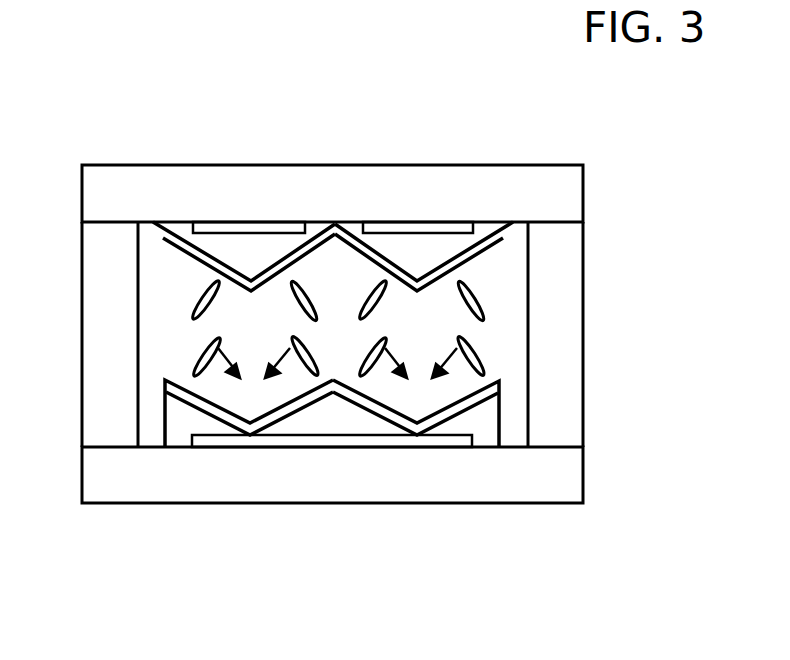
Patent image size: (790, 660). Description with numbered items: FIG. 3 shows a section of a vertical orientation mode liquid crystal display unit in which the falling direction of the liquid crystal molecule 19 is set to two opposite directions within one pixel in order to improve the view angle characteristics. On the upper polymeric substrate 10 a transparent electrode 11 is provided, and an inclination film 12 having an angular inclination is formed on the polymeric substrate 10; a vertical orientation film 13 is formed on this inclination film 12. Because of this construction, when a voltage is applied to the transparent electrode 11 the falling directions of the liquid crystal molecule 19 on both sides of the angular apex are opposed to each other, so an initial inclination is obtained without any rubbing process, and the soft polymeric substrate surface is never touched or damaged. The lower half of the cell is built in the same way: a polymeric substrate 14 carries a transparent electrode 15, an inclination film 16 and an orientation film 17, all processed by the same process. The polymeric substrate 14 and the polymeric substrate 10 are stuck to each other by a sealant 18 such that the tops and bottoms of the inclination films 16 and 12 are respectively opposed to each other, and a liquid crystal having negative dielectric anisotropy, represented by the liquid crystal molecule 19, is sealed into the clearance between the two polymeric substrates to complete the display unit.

The polymeric substrate 10 is at (125, 175).
The transparent electrode 11 is at (290, 230).
The inclination film 12 is at (233, 247).
The vertical orientation film 13 is at (385, 252).
The polymeric substrate 14 is at (117, 475).
The transparent electrode 15 is at (442, 440).
The inclination film 16 is at (313, 420).
The orientation film 17 is at (360, 398).
The sealant 18 is at (553, 282).
The liquid crystal molecule 19 is at (480, 358).